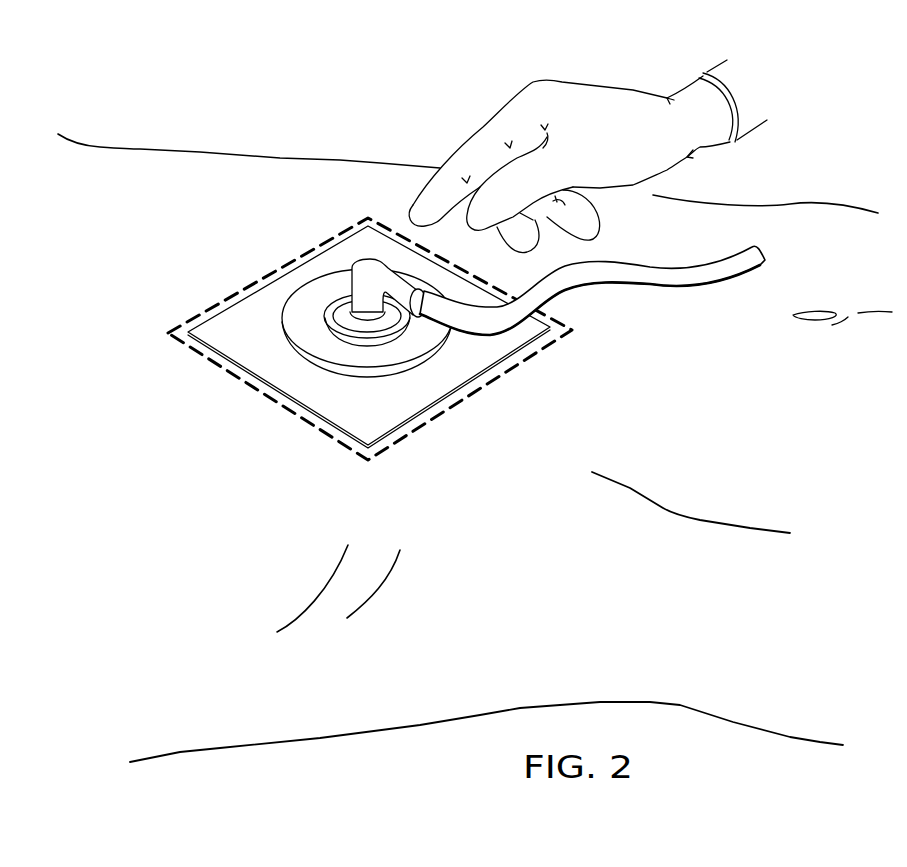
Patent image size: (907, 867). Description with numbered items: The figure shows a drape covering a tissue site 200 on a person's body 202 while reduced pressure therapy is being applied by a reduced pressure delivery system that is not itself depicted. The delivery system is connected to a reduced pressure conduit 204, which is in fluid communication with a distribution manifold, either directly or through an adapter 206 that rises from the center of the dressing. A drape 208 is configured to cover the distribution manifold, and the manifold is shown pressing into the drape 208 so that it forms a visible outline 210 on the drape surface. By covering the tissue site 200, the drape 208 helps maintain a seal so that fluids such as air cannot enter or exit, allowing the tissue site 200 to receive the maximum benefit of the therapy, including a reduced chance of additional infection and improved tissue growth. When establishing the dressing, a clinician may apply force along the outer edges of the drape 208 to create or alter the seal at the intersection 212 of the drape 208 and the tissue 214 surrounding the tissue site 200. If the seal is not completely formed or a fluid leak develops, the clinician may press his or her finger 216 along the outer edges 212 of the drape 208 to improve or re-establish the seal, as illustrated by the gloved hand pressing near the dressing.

The tissue site 200 is at (165, 242).
The person's body 202 is at (375, 162).
The reduced pressure conduit 204 is at (700, 290).
The adapter 206 is at (333, 237).
The drape 208 is at (374, 336).
The outline 210 is at (297, 348).
The intersection 212 is at (483, 368).
The tissue 214 is at (312, 423).
The finger 216 is at (537, 82).